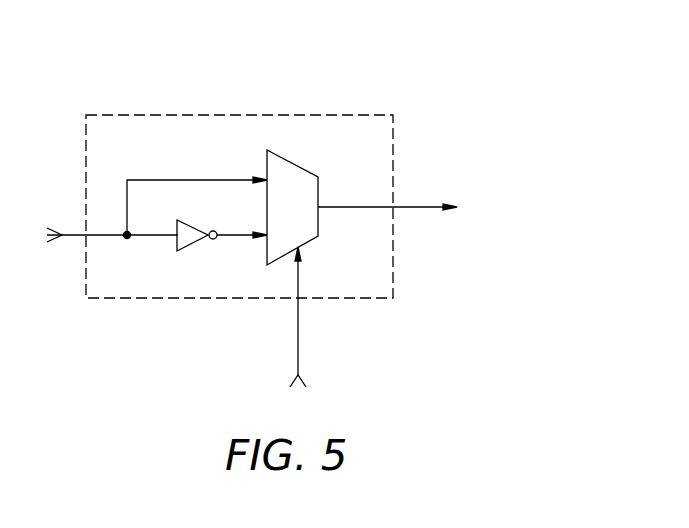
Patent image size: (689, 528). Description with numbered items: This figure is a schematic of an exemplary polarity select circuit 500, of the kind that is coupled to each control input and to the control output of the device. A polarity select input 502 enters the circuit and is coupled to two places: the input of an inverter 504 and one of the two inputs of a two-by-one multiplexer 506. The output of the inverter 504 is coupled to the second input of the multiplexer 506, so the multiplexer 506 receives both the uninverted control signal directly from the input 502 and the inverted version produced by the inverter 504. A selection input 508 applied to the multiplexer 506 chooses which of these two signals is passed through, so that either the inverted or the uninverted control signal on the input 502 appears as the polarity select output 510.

The polarity select circuit 500 is at (368, 62).
The polarity select input 502 is at (73, 235).
The inverter 504 is at (190, 243).
The 2×1 multiplexer 506 is at (302, 158).
The selection input 508 is at (298, 338).
The polarity select output 510 is at (418, 203).